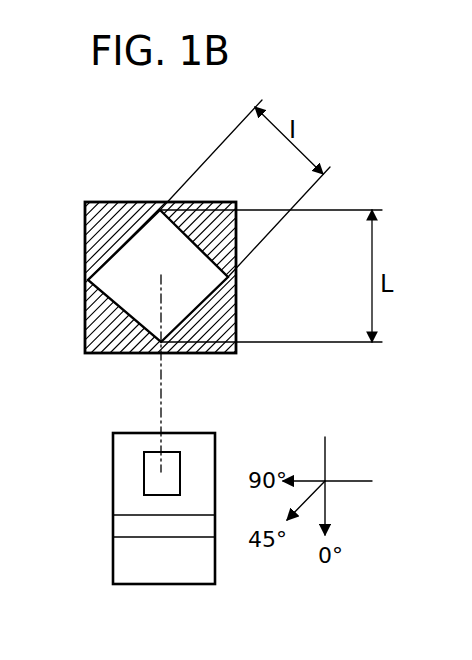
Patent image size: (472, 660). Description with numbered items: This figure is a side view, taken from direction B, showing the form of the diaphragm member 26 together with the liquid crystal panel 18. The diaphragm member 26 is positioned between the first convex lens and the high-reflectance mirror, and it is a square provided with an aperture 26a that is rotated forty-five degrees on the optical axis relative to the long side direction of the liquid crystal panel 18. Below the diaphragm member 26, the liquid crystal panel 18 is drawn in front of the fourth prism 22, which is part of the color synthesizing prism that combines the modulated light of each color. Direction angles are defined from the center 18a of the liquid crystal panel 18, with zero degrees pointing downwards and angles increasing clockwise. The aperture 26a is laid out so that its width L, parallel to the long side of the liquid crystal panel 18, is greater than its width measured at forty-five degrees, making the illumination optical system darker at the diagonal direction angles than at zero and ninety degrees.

The diaphragm member 26 is at (104, 202).
The aperture 26a is at (207, 275).
The fourth prism 22 is at (215, 440).
The liquid crystal panel 18 is at (143, 452).
The center of the liquid crystal panel 18a is at (155, 480).